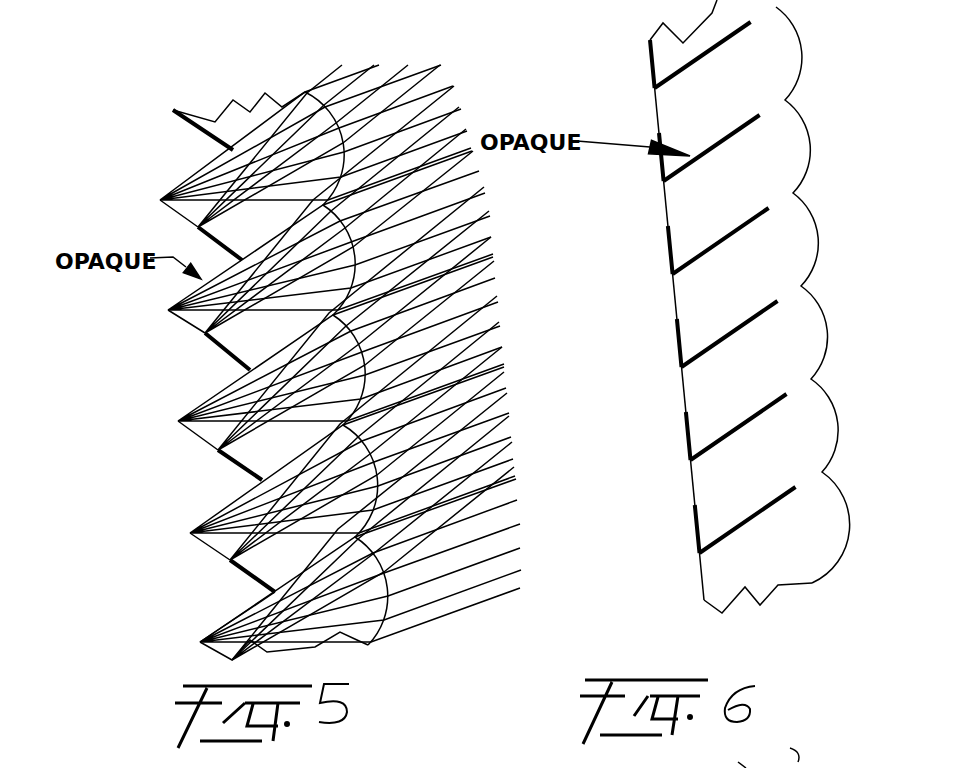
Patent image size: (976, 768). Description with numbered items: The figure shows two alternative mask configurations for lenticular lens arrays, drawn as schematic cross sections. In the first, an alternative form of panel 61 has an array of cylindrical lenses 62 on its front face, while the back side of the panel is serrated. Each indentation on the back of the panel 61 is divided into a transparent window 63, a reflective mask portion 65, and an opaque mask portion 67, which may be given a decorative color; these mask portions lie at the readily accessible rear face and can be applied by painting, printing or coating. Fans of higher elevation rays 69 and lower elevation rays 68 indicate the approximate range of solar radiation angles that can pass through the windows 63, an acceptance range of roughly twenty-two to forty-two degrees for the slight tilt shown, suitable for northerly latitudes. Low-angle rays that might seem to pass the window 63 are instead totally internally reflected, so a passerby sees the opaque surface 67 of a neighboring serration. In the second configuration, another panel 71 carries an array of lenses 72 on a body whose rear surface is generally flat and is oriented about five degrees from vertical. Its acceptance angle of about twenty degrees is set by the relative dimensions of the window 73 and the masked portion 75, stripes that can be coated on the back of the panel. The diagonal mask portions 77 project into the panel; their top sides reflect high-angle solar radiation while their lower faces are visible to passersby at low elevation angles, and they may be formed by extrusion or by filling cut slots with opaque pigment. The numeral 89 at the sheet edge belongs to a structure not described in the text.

In FIG. 5, the panel 61 is at (319, 643).
In FIG. 5, the cylindrical lenses 62 is at (387, 599).
In FIG. 5, the transparent window 63 is at (224, 559).
In FIG. 5, the reflective mask portion 65 is at (259, 589).
In FIG. 5, the opaque mask portion 67 is at (240, 491).
In FIG. 5, the lower elevation rays 68 is at (418, 362).
In FIG. 5, the higher elevation rays 69 is at (413, 274).
In FIG. 6, the panel 71 is at (760, 604).
In FIG. 6, the lenses 72 is at (839, 488).
In FIG. 6, the window 73 is at (684, 401).
In FIG. 6, the masked portion 75 is at (687, 438).
In FIG. 6, the mask portion 77 is at (743, 427).
In FIG. 6, the element 89 is at (768, 755).